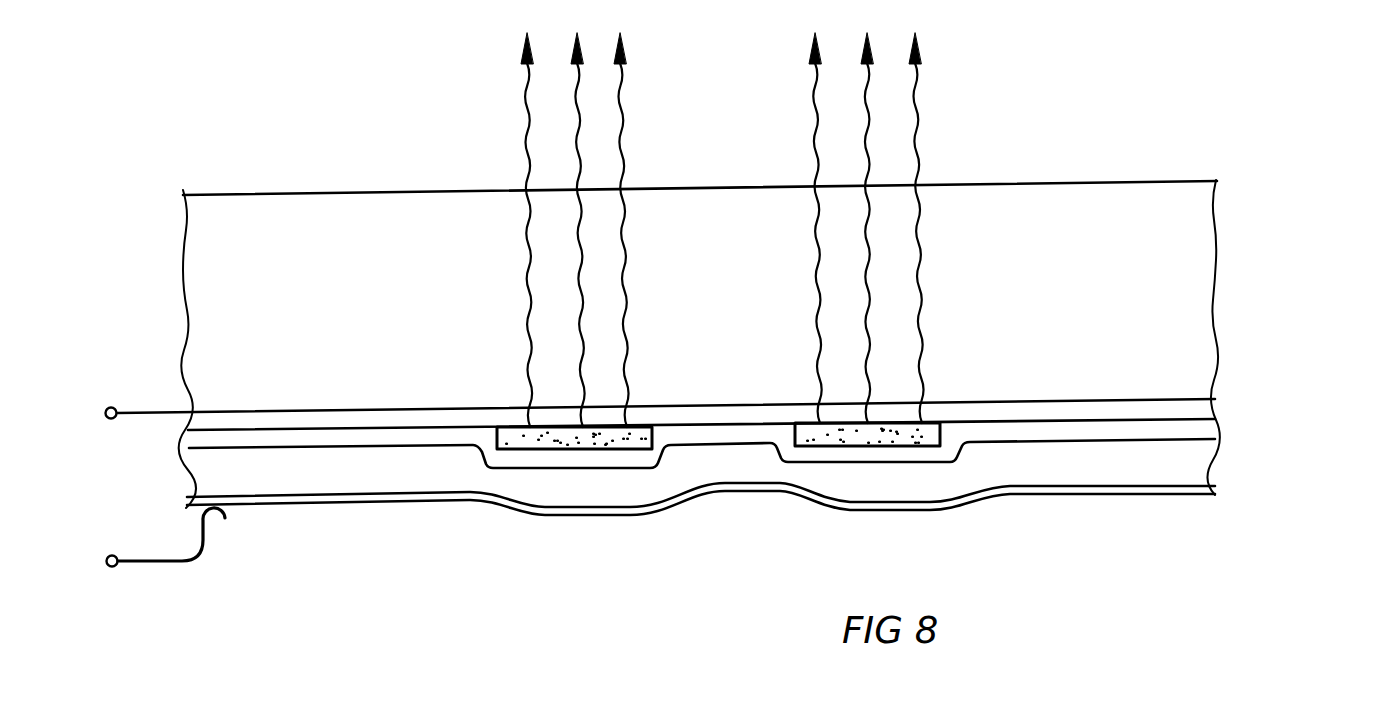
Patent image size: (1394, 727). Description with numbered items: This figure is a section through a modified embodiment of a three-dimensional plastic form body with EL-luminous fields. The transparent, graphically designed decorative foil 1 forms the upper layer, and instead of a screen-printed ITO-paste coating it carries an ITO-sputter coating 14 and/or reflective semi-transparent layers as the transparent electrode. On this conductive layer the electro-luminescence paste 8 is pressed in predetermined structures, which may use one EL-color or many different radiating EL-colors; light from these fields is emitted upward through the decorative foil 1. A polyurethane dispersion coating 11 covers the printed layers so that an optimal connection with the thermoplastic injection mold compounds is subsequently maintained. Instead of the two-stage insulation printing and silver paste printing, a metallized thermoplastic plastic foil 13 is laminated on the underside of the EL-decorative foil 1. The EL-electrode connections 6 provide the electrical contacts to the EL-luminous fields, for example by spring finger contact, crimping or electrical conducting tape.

The decorative foil 1 is at (1188, 218).
The EL-electrode connections 6 is at (143, 417).
The electro-luminescence paste 8 is at (797, 437).
The polyurethane dispersion coating 11 is at (1203, 428).
The metallized thermoplastic plastic foil 13 is at (1195, 454).
The ITO-sputter coating 14 is at (1200, 407).